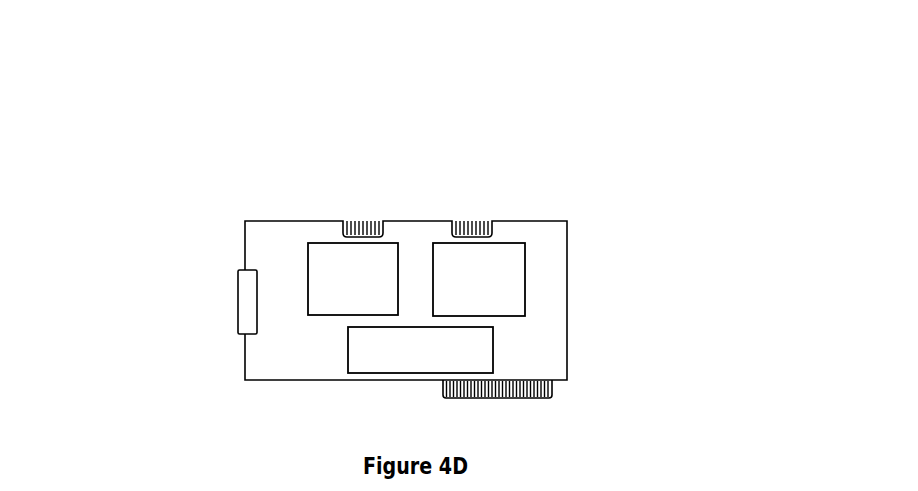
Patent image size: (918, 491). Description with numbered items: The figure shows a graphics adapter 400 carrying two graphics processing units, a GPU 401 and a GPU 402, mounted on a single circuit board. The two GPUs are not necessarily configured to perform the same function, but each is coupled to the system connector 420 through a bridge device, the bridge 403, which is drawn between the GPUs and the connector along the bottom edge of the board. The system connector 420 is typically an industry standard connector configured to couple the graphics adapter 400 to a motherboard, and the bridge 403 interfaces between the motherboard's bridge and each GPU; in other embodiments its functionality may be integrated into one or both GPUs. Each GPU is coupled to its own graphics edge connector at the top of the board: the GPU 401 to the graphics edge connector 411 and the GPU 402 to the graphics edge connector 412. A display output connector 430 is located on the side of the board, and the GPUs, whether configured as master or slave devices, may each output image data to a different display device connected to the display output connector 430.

The graphics adapter 400 is at (701, 202).
The GPU 401 is at (374, 302).
The GPU 402 is at (499, 302).
The bridge 403 is at (479, 360).
The graphics edge connector 411 is at (352, 221).
The graphics edge connector 412 is at (468, 222).
The system connector 420 is at (553, 392).
The display output connector 430 is at (237, 308).